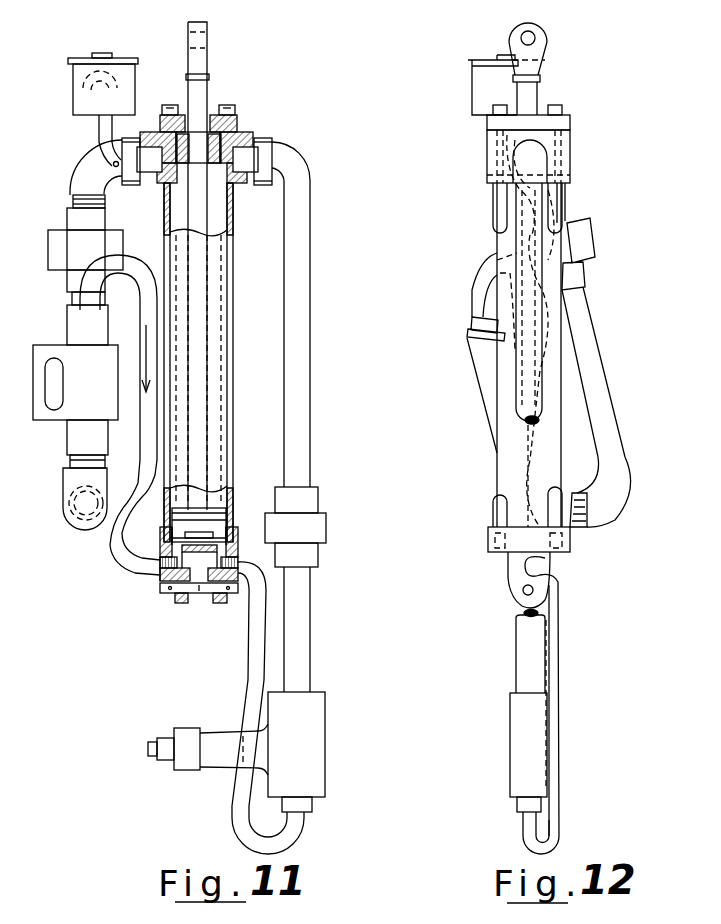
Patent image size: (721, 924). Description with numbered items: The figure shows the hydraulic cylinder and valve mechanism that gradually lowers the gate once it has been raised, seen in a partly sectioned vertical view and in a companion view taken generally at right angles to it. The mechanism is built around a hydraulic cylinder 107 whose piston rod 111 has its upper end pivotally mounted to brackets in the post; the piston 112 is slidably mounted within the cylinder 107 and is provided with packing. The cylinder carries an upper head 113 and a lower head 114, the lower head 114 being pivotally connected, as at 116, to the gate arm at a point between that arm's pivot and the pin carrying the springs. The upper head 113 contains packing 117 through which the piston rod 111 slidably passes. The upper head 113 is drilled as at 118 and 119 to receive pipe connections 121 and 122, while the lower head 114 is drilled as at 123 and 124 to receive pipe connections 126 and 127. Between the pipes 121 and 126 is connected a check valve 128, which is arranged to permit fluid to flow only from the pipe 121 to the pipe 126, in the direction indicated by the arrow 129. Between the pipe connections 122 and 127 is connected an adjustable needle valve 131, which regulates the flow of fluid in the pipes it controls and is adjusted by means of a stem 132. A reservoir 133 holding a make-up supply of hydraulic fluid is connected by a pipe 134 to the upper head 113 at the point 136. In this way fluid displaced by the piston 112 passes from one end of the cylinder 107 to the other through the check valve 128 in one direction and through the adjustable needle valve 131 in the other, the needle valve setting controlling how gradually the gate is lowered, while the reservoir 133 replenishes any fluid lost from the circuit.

In FIG. 11, the hydraulic cylinder 107 is at (232, 280).
In FIG. 12, the hydraulic cylinder 107 is at (565, 367).
In FIG. 11, the piston rod 111 is at (200, 97).
In FIG. 12, the piston rod 111 is at (530, 100).
In FIG. 11, the piston 112 is at (183, 523).
In FIG. 11, the upper head 113 is at (255, 142).
In FIG. 12, the upper head 113 is at (572, 155).
In FIG. 11, the lower head 114 is at (182, 606).
In FIG. 12, the lower head 114 is at (495, 530).
In FIG. 11, the pivotal connection 116 is at (162, 582).
In FIG. 11, the packing 117 is at (234, 120).
In FIG. 11, the drilled hole 118 is at (160, 176).
In FIG. 11, the drilled hole 119 is at (238, 180).
In FIG. 11, the pipe connection 121 is at (76, 185).
In FIG. 11, the pipe connection 122 is at (288, 160).
In FIG. 11, the drilled hole 123 is at (192, 590).
In FIG. 11, the drilled hole 124 is at (221, 604).
In FIG. 11, the pipe connection 126 is at (158, 578).
In FIG. 11, the pipe connection 127 is at (262, 565).
In FIG. 11, the check valve 128 is at (44, 345).
In FIG. 11, the arrow 129 is at (146, 355).
In FIG. 11, the adjustable needle valve 131 is at (330, 708).
In FIG. 12, the adjustable needle valve 131 is at (520, 760).
In FIG. 11, the stem 132 is at (150, 755).
In FIG. 11, the reservoir 133 is at (138, 80).
In FIG. 12, the reservoir 133 is at (478, 90).
In FIG. 11, the pipe 134 is at (99, 134).
In FIG. 12, the connection point 136 is at (490, 185).